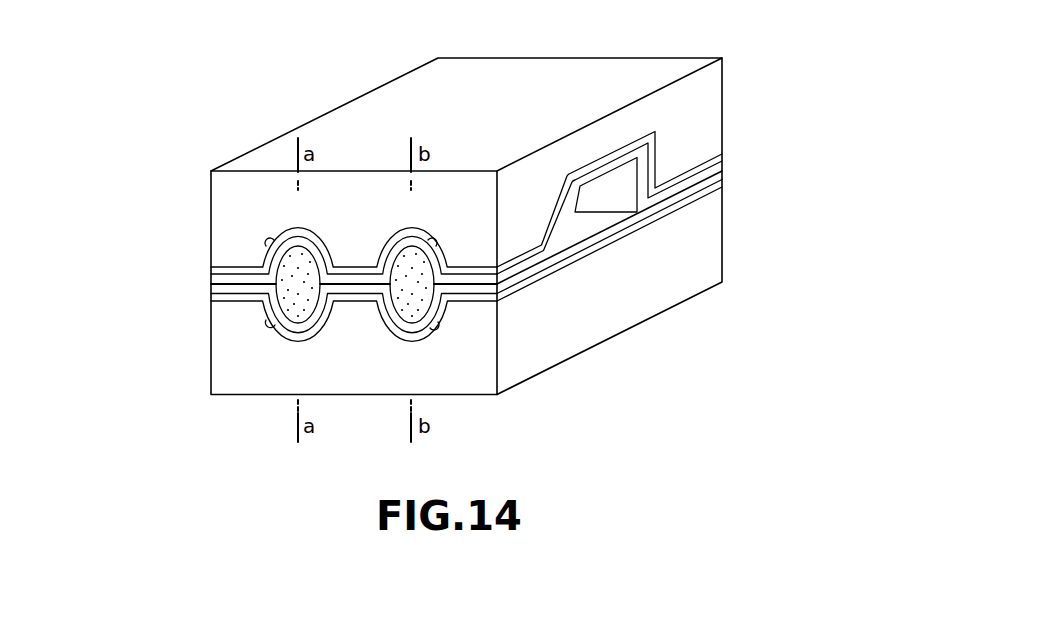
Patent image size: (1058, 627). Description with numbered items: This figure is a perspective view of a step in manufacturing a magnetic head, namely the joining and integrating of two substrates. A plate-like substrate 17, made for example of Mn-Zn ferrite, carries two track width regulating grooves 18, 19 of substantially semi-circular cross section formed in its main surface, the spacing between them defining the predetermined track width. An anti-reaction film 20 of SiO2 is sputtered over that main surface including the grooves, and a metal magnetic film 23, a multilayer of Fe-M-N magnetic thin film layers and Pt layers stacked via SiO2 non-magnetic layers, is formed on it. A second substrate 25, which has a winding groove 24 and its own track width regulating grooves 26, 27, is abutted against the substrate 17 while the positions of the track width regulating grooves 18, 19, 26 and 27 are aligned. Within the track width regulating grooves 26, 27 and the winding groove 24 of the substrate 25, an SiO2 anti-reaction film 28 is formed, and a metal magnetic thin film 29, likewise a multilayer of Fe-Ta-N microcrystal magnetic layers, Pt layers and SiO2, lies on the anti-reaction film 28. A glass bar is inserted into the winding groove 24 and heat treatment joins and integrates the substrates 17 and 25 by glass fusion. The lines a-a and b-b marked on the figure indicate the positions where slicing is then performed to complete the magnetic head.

The substrate 17 is at (588, 328).
The track width regulating groove 18 is at (268, 322).
The track width regulating groove 19 is at (436, 326).
The anti-reaction film 20 is at (361, 296).
The metal magnetic film 23 is at (222, 287).
The winding groove 24 is at (594, 181).
The substrate 25 is at (704, 94).
The track width regulating groove 26 is at (268, 242).
The track width regulating groove 27 is at (437, 240).
The anti-reaction film 28 is at (357, 272).
The metal magnetic thin film 29 is at (222, 278).